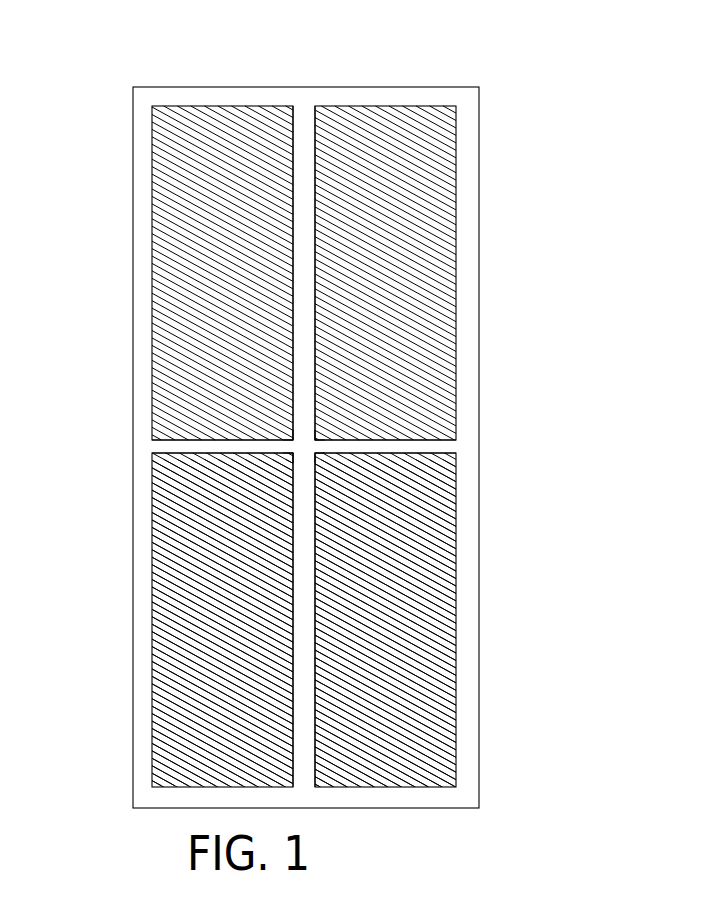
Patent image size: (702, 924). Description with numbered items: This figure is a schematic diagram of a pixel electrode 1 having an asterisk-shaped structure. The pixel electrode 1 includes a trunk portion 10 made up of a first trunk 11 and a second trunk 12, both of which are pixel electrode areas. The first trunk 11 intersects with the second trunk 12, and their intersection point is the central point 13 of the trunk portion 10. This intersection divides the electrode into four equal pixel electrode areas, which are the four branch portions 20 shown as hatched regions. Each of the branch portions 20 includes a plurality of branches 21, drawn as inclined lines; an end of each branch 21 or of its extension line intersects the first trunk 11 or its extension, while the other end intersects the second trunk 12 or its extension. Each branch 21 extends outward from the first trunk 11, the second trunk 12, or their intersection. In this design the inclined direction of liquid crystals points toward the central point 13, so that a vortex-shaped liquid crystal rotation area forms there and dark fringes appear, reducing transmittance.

The pixel electrode 1 is at (403, 88).
The trunk portion 10 is at (313, 446).
The first trunk 11 is at (408, 443).
The second trunk 12 is at (305, 522).
The central point 13 is at (303, 446).
The branch portions 20 is at (409, 450).
The branch 21 is at (437, 262).